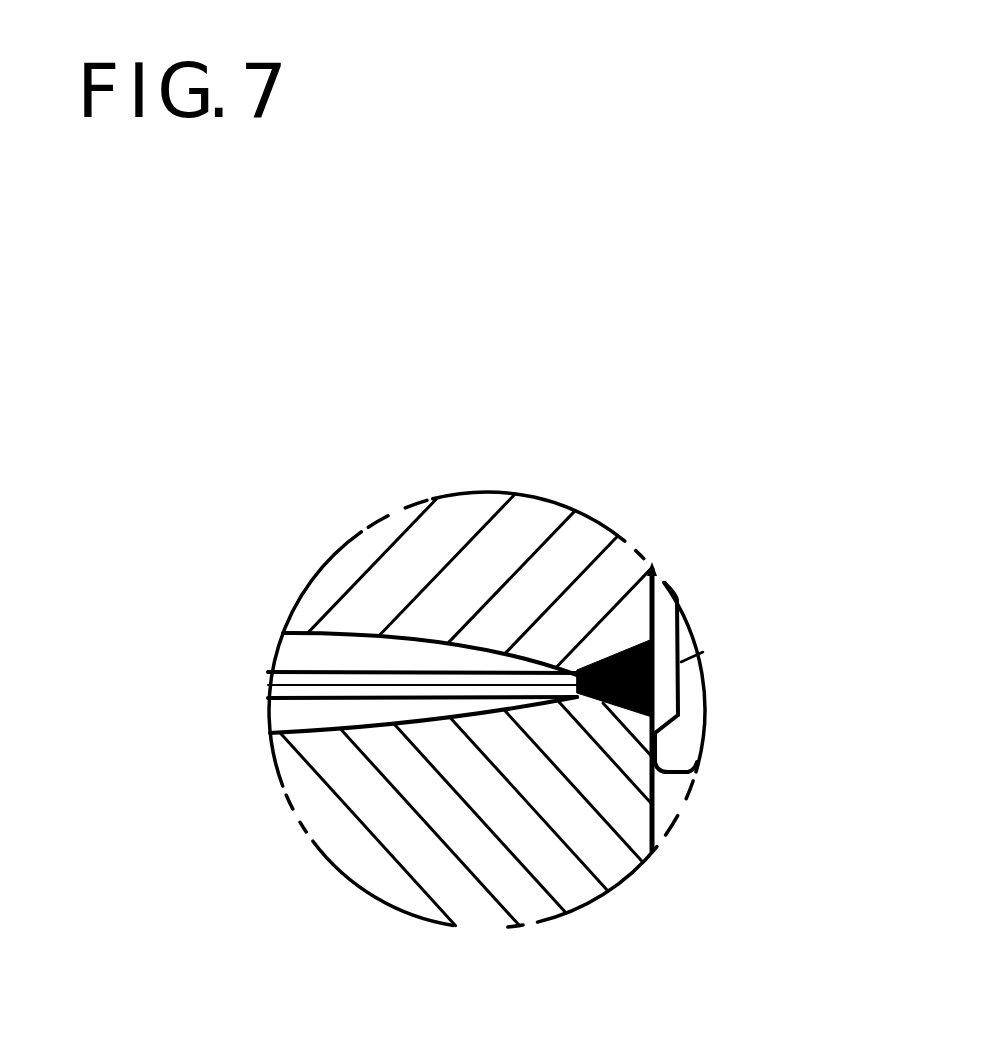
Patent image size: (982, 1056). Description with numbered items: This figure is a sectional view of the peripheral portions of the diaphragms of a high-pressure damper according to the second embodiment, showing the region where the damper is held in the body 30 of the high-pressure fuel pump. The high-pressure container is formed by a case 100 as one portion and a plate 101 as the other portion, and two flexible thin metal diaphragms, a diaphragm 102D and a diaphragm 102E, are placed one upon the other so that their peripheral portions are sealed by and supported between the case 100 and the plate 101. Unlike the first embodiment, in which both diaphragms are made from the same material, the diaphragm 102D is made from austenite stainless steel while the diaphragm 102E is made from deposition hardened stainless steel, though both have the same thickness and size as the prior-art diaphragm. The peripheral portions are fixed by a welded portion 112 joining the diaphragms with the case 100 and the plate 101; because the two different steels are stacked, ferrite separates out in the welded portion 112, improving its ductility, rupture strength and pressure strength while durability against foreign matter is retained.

The case 100 is at (327, 580).
The plate 101 is at (405, 905).
The diaphragm 102D is at (283, 637).
The diaphragm 102E is at (277, 731).
The welded portion 112 is at (655, 645).
The body 30 is at (691, 685).